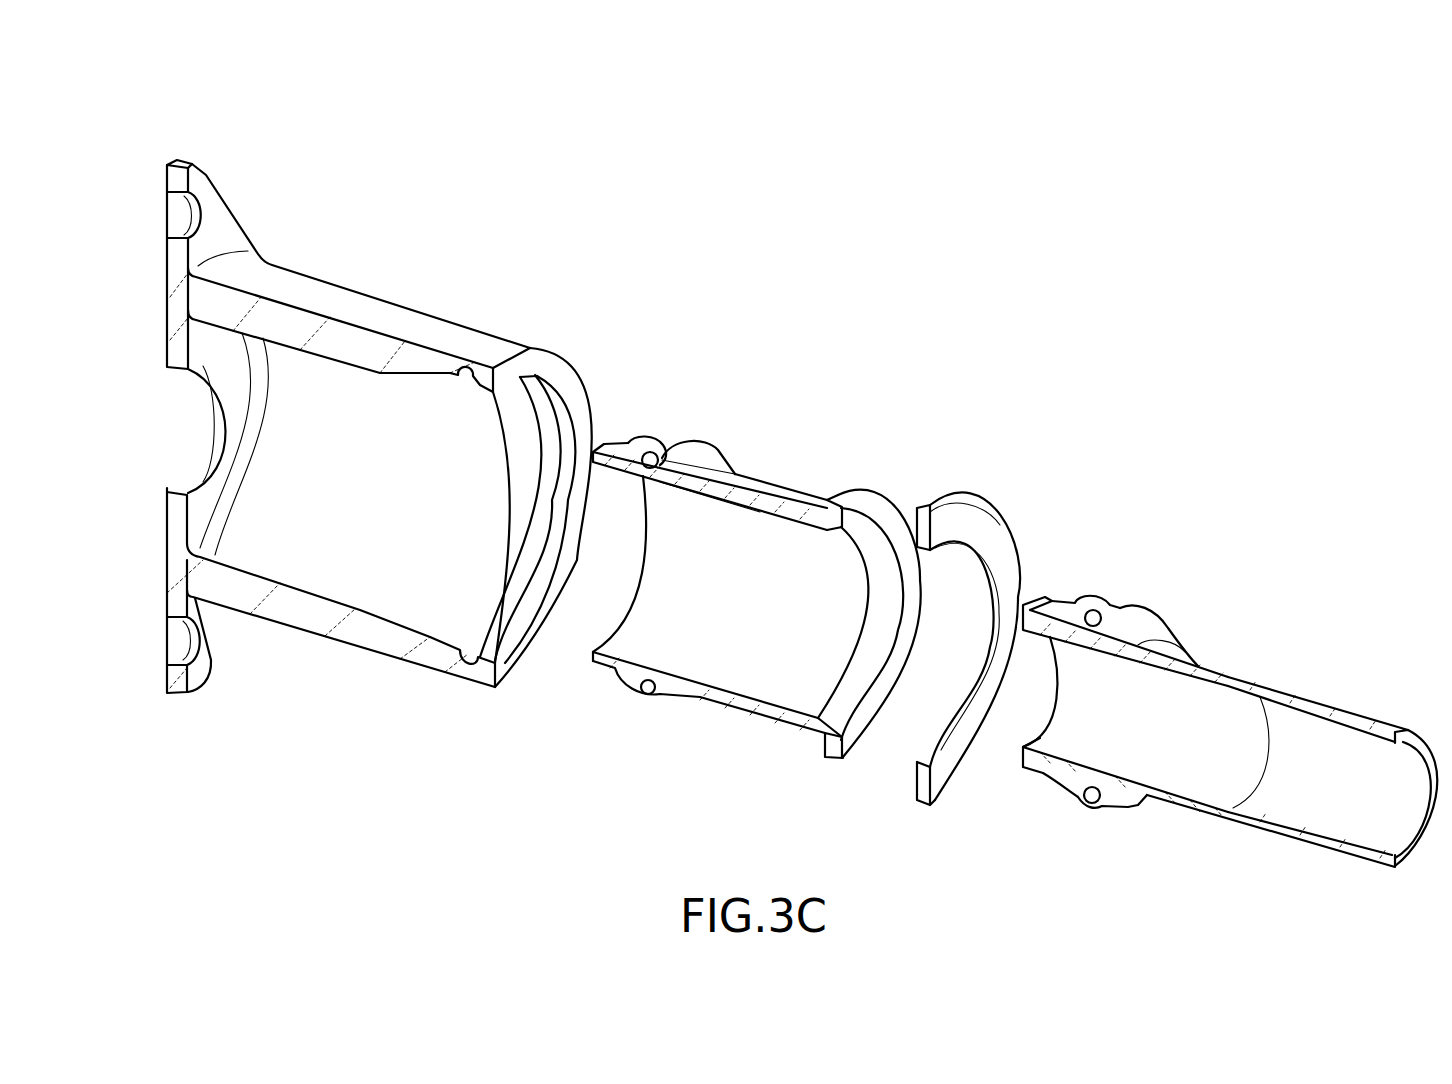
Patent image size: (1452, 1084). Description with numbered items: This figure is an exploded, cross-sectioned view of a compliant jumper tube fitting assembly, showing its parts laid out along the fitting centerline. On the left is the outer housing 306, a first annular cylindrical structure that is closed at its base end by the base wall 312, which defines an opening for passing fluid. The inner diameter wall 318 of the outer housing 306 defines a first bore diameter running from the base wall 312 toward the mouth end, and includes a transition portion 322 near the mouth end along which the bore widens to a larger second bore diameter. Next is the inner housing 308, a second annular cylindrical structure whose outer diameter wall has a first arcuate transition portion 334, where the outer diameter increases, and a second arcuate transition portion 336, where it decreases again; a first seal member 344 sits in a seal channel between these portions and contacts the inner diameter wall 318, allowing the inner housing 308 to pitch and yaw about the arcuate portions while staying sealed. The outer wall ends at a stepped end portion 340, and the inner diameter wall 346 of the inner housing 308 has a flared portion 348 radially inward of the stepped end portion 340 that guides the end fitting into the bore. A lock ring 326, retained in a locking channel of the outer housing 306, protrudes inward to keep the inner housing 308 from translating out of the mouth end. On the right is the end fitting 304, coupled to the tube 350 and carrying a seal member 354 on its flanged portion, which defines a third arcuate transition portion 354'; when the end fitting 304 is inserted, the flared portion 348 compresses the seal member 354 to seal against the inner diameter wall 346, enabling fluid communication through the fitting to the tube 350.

The outer housing 306 is at (413, 140).
The base wall 312 is at (172, 316).
The inner diameter wall 318 is at (313, 350).
The transition portion 322 is at (412, 375).
The inner housing 308 is at (782, 388).
The first arcuate transition portion 334 is at (648, 440).
The second arcuate transition portion 336 is at (708, 455).
The inner diameter wall 346 is at (704, 496).
The first seal member 344 is at (650, 697).
The stepped end portion 340 is at (868, 490).
The flared portion 348 is at (830, 532).
The lock ring 326 is at (962, 493).
The end fitting 304 is at (1238, 512).
The seal member 354 is at (1108, 702).
The third arcuate transition portion 354' is at (1086, 568).
The tube 350 is at (1290, 686).